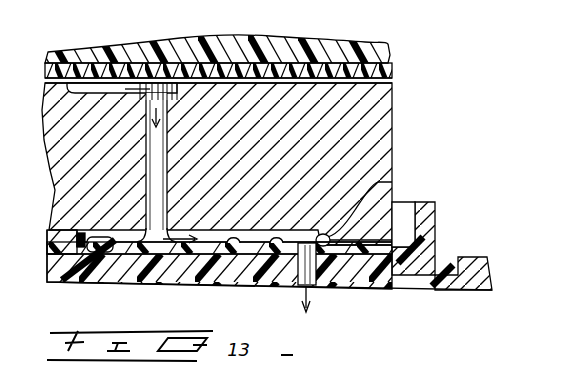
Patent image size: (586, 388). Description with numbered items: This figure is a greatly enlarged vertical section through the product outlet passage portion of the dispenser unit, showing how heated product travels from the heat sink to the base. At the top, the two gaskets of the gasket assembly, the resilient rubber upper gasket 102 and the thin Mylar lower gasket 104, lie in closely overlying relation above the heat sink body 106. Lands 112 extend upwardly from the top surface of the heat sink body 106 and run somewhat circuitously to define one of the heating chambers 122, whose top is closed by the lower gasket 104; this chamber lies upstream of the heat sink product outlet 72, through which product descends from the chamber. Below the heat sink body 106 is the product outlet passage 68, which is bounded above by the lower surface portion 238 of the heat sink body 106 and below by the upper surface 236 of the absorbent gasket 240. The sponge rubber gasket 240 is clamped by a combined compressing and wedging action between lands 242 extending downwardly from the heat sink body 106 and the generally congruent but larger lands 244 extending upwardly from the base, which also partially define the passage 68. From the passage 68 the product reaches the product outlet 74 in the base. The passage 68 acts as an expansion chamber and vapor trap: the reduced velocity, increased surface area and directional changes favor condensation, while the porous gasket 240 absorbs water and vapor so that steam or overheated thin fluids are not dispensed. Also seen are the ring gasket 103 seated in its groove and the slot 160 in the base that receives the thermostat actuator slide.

The product outlet passage 68 is at (289, 246).
The heat sink product outlet 72 is at (167, 157).
The product outlet 74 is at (311, 280).
The upper gasket 102 is at (393, 72).
The ring gasket 103 is at (407, 242).
The lower gasket 104 is at (394, 80).
The heat sink body 106 is at (393, 112).
The lands 112 is at (80, 86).
The heating chamber 122 is at (108, 88).
The slot 160 is at (443, 272).
The upper surface of absorbent gasket 236 is at (237, 246).
The lower surface portion of heat sink body 238 is at (352, 203).
The absorbent gasket 240 is at (213, 246).
The lands on heat sink body 242 is at (158, 258).
The lands on base 244 is at (93, 283).